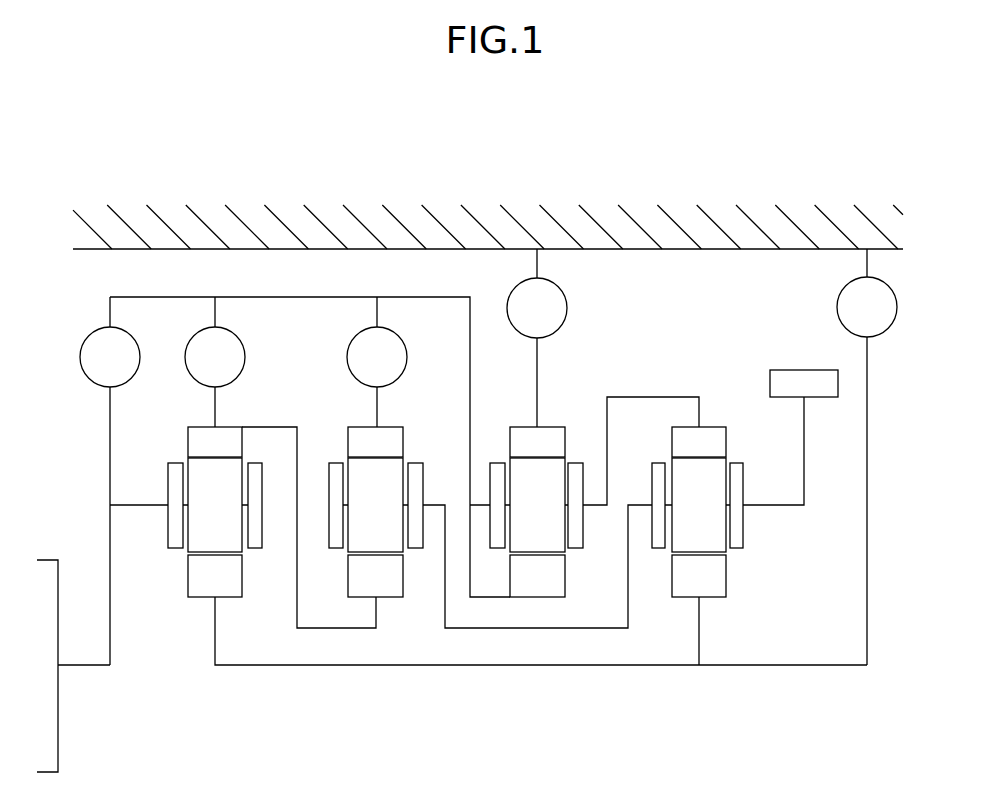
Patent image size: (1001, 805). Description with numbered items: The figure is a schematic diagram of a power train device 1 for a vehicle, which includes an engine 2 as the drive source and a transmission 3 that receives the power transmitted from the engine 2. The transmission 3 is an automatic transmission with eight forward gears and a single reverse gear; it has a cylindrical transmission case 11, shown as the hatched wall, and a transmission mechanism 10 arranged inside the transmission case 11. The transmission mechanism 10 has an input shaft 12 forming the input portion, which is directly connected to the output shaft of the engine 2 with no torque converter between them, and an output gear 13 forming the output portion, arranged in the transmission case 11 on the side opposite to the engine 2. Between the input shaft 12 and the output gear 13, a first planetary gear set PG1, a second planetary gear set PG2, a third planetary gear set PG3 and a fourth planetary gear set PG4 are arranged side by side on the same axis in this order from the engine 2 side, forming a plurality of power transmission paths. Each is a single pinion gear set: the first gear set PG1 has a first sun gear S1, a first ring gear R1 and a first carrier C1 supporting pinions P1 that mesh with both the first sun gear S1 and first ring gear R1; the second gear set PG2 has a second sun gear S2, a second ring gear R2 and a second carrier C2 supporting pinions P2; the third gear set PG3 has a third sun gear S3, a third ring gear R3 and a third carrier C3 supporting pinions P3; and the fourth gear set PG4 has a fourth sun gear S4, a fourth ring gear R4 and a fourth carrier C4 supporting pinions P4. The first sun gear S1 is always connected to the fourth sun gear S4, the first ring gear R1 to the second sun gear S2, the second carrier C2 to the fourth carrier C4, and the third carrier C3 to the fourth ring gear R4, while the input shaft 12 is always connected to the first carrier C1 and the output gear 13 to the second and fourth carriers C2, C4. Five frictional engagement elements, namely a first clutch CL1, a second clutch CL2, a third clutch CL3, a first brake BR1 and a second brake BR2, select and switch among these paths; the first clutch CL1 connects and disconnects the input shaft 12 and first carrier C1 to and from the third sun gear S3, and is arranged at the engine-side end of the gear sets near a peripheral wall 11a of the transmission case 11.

The power train device 1 is at (142, 128).
The engine 2 is at (47, 558).
The transmission 3 is at (146, 195).
The transmission mechanism 10 is at (901, 287).
The transmission case 11 is at (488, 189).
The peripheral wall 11a is at (683, 215).
The input shaft 12 is at (90, 662).
The output gear 13 is at (784, 368).
The first clutch CL1 is at (110, 357).
The second clutch CL2 is at (215, 357).
The third clutch CL3 is at (377, 357).
The first brake BR1 is at (867, 457).
The second brake BR2 is at (537, 338).
The first planetary gear set PG1 is at (232, 419).
The second planetary gear set PG2 is at (394, 417).
The third planetary gear set PG3 is at (555, 411).
The fourth planetary gear set PG4 is at (739, 591).
The first carrier C1 is at (178, 460).
The second carrier C2 is at (337, 460).
The third carrier C3 is at (500, 460).
The fourth carrier C4 is at (660, 463).
The first ring gear R1 is at (215, 442).
The second ring gear R2 is at (375, 442).
The third ring gear R3 is at (537, 442).
The fourth ring gear R4 is at (699, 442).
The pinions P1 is at (215, 505).
The pinions P2 is at (375, 505).
The pinions P3 is at (537, 505).
The pinions P4 is at (699, 505).
The first sun gear S1 is at (215, 576).
The second sun gear S2 is at (375, 576).
The third sun gear S3 is at (537, 576).
The fourth sun gear S4 is at (699, 576).